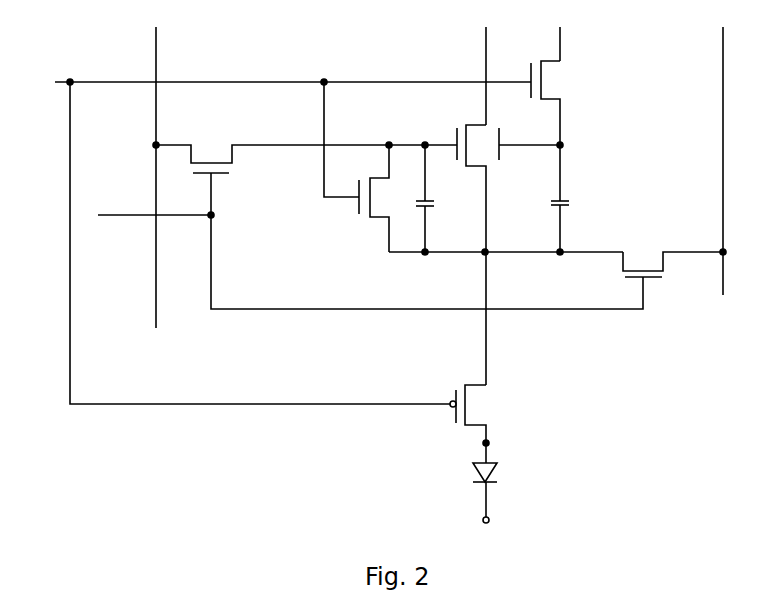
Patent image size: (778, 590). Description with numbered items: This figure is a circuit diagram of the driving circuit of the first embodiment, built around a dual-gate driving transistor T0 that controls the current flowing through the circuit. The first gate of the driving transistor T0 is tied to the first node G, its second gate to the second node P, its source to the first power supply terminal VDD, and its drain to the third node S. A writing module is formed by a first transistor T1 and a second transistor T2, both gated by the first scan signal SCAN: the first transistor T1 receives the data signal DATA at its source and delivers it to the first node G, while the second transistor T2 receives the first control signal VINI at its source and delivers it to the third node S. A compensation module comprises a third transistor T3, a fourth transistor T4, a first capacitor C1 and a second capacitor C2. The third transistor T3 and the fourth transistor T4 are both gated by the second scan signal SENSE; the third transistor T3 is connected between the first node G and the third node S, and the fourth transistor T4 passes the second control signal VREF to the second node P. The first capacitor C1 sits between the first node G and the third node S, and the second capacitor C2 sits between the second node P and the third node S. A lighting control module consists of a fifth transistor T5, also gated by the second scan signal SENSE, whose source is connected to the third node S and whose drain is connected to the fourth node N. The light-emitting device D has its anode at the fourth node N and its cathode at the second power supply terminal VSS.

The driving transistor T0 is at (508, 255).
The first transistor T1 is at (306, 180).
The second transistor T2 is at (673, 264).
The third transistor T3 is at (357, 167).
The fourth transistor T4 is at (547, 131).
The fifth transistor T5 is at (469, 424).
The first capacitor C1 is at (434, 198).
The second capacitor C2 is at (569, 226).
The light-emitting device D is at (493, 473).
The first node G is at (387, 136).
The third node S is at (490, 259).
The second node P is at (565, 147).
The fourth node N is at (479, 445).
The second scan signal SENSE is at (290, 230).
The data signal DATA is at (155, 172).
The first scan signal SCAN is at (370, 253).
The first power supply terminal VDD is at (485, 68).
The second control signal VREF is at (556, 36).
The first control signal VINI is at (719, 153).
The second power supply terminal VSS is at (466, 505).